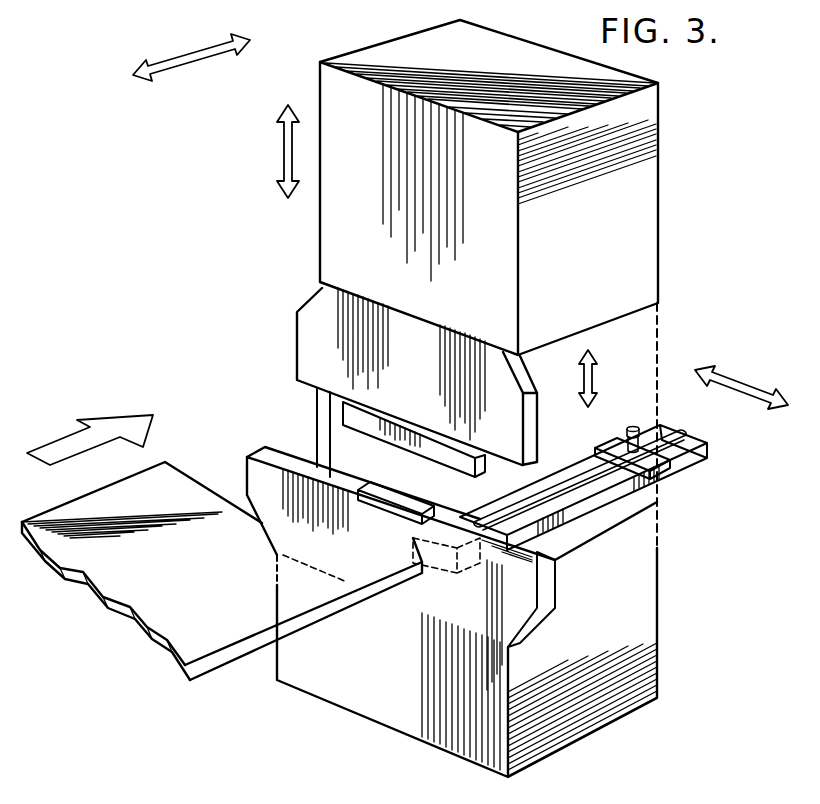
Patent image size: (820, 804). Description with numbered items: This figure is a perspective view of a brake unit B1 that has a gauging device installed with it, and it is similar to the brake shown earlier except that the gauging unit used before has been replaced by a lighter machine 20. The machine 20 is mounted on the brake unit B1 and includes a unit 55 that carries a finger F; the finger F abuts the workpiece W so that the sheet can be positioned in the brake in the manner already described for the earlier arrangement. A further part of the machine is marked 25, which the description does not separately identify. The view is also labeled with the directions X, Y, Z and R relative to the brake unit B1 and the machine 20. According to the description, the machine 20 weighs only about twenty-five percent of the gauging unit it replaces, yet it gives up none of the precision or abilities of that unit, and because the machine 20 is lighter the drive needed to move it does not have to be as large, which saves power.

The brake unit B1 is at (647, 207).
The workpiece W is at (233, 630).
The machine 20 is at (618, 487).
The clamp plate 25 is at (670, 482).
The unit 55 is at (667, 466).
The finger F is at (631, 462).
The X-axis direction arrow X is at (191, 50).
The Y-axis direction arrow Y is at (278, 151).
The Z-axis direction arrow Z is at (741, 384).
The R direction arrow R is at (596, 378).